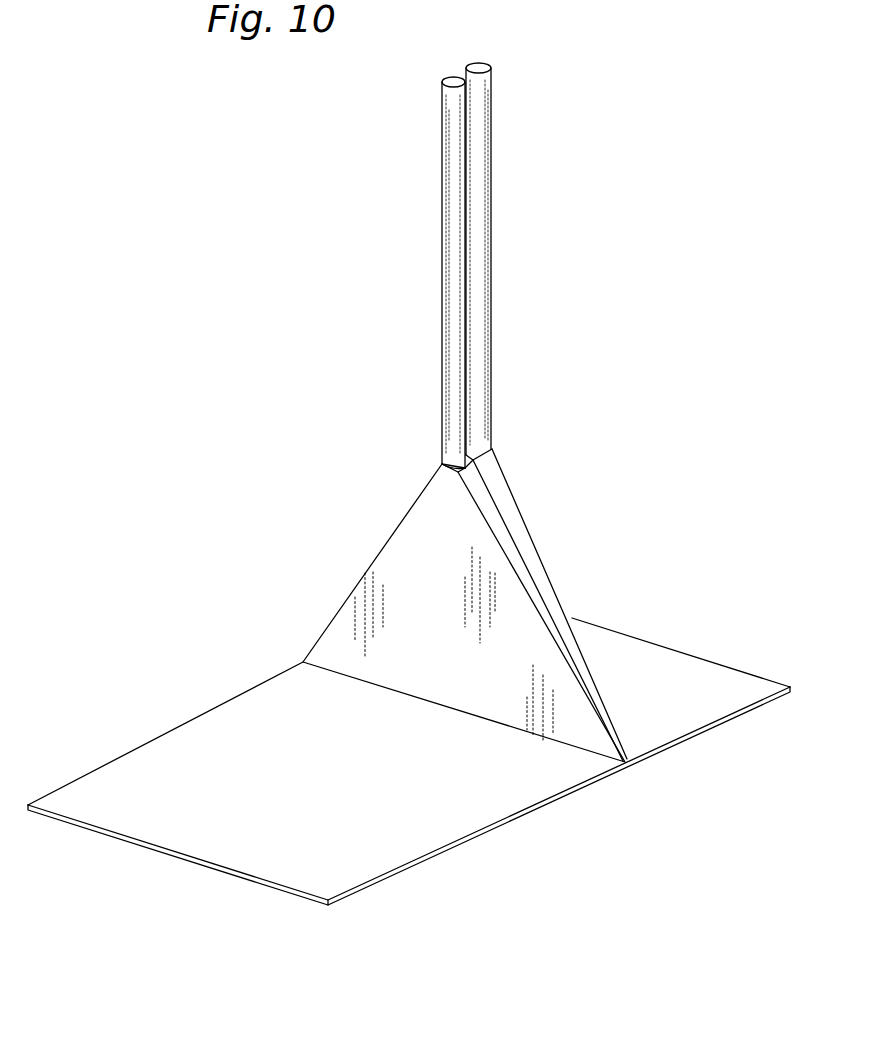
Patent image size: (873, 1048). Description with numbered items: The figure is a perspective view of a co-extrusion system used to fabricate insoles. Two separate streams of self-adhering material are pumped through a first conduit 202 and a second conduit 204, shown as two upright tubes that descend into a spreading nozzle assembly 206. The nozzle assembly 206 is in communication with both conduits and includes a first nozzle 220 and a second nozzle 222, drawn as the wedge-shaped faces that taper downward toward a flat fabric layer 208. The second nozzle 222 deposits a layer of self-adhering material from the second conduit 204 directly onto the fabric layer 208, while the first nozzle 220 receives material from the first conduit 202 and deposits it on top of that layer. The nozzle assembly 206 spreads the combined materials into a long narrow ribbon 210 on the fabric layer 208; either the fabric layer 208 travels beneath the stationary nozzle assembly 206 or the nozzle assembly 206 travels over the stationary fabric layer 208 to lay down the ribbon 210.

The first conduit 202 is at (443, 153).
The second conduit 204 is at (492, 108).
The spreading nozzle assembly 206 is at (480, 586).
The fabric layer 208 is at (409, 743).
The ribbon 210 is at (187, 762).
The first nozzle 220 is at (440, 500).
The second nozzle 222 is at (512, 472).